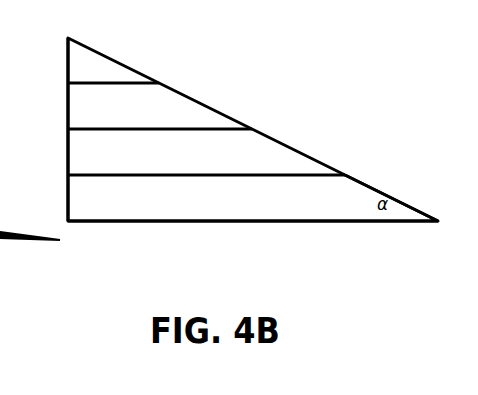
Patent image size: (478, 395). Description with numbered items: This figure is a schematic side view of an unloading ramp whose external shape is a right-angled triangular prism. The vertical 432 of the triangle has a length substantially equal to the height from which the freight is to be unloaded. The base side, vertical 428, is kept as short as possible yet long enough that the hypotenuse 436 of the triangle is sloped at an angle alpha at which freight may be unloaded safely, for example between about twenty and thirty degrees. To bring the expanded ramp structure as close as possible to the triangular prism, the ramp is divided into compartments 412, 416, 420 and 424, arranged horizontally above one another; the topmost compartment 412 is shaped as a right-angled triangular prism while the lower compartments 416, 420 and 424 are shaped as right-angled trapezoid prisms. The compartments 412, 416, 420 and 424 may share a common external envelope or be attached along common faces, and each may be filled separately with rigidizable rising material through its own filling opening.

The compartment 412 is at (103, 63).
The compartment 416 is at (180, 110).
The compartment 420 is at (282, 160).
The compartment 424 is at (347, 188).
The vertical of the triangle 428 is at (237, 223).
The vertical of the triangle 432 is at (68, 148).
The hypotenuse of the triangle 436 is at (218, 110).